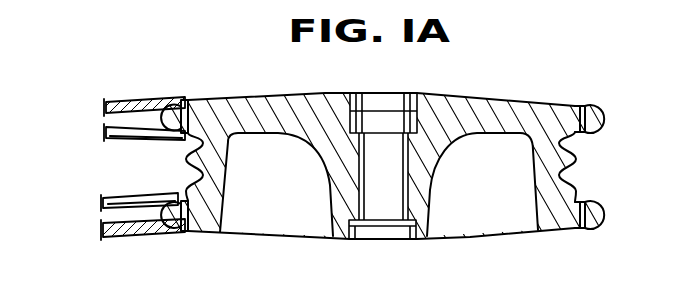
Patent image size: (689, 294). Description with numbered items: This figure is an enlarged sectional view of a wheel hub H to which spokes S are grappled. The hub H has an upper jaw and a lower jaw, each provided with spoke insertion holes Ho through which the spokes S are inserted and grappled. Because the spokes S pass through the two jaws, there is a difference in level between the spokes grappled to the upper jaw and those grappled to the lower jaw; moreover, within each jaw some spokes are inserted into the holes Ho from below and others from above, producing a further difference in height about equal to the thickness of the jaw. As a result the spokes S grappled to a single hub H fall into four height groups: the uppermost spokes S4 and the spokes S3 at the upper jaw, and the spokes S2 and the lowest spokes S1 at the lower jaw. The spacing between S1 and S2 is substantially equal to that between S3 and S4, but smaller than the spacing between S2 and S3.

The hub H is at (280, 100).
The spoke insertion holes Ho is at (182, 101).
The spokes S is at (122, 154).
The lowest spokes S1 is at (103, 232).
The spokes positioning at the third from the top S2 is at (103, 207).
The spokes of lower position S3 is at (107, 132).
The upper most spokes S4 is at (105, 109).